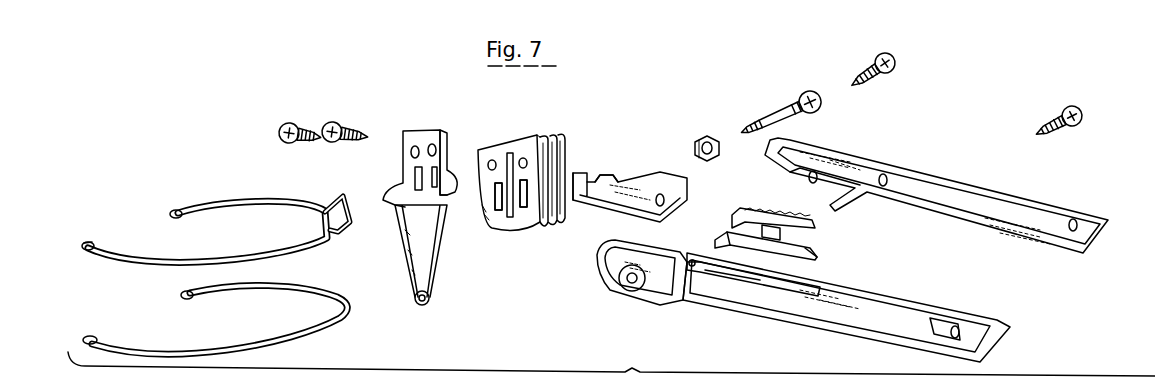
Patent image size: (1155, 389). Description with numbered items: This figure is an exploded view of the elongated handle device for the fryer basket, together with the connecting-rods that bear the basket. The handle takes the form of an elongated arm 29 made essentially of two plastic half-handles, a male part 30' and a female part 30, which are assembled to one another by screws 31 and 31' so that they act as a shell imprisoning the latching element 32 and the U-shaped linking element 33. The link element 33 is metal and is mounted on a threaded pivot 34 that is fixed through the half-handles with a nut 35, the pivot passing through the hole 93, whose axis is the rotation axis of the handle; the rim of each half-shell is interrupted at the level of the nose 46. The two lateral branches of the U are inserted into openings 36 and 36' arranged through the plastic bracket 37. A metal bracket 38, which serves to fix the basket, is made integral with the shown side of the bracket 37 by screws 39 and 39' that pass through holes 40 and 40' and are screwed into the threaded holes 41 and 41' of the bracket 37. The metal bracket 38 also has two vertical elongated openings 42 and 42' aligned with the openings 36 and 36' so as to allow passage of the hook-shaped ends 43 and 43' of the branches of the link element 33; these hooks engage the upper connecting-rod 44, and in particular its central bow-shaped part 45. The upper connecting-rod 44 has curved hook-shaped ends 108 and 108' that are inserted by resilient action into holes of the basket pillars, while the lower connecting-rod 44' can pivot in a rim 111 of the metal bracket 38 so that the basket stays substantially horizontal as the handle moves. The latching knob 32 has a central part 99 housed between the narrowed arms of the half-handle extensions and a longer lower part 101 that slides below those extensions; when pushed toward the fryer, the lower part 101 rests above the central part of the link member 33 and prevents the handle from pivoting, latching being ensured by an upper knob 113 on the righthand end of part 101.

The elongated arm 29 is at (935, 276).
The female half-handle 30 is at (846, 307).
The male half-handle 30' is at (936, 195).
The screw 31 is at (887, 64).
The screw 31' is at (1079, 116).
The latching element 32 is at (735, 215).
The linking element 33 is at (645, 188).
The threaded pivot 34 is at (775, 110).
The nut 35 is at (702, 138).
The opening 36 is at (479, 219).
The opening 36' is at (526, 225).
The bracket 37 is at (484, 148).
The metal bracket 38 is at (412, 278).
The screw 39 is at (289, 120).
The screw 39' is at (338, 120).
The hole 40 is at (400, 126).
The hole 40' is at (434, 125).
The threaded hole 41 is at (504, 134).
The threaded hole 41' is at (540, 132).
The vertical elongated opening 42 is at (393, 175).
The vertical elongated opening 42' is at (456, 165).
The hook-shaped end 43 is at (583, 149).
The hook-shaped end 43' is at (604, 163).
The upper connecting-rod 44 is at (207, 231).
The lower connecting-rod 44' is at (215, 320).
The central bow-shaped part 45 is at (325, 205).
The nose 46 is at (598, 256).
The hole 93 is at (622, 288).
The central part 99 is at (782, 235).
The lower part 101 is at (722, 240).
The hook-shaped end 108 is at (107, 230).
The hook-shaped end 108' is at (176, 192).
The rim 111 is at (418, 304).
The upper knob 113 is at (817, 257).